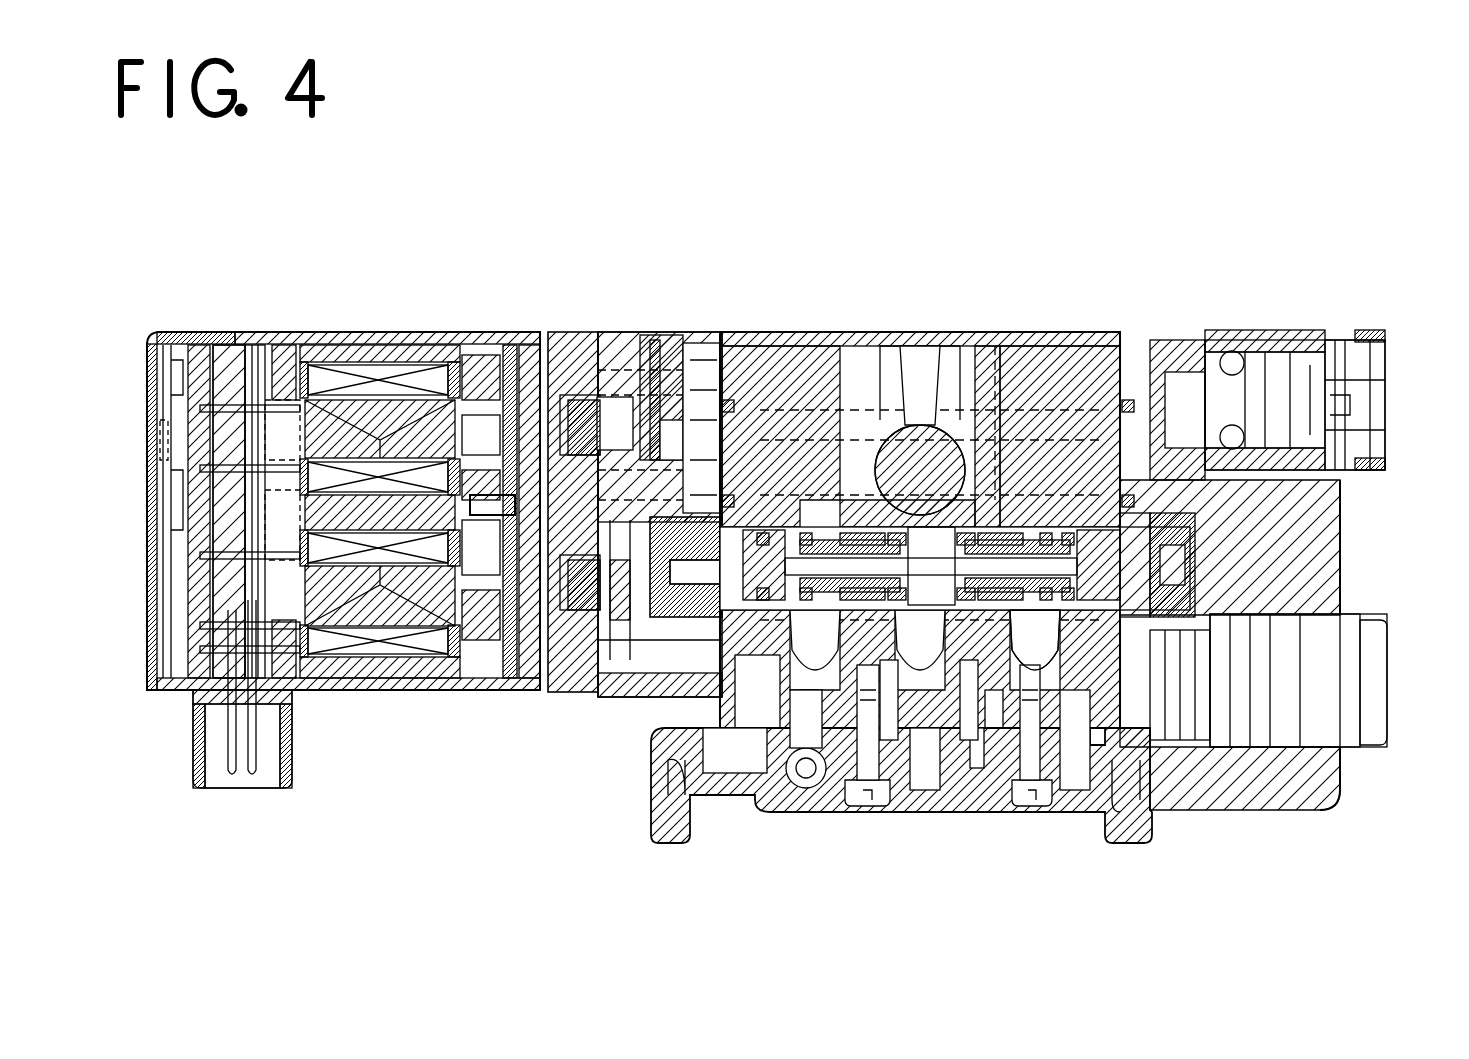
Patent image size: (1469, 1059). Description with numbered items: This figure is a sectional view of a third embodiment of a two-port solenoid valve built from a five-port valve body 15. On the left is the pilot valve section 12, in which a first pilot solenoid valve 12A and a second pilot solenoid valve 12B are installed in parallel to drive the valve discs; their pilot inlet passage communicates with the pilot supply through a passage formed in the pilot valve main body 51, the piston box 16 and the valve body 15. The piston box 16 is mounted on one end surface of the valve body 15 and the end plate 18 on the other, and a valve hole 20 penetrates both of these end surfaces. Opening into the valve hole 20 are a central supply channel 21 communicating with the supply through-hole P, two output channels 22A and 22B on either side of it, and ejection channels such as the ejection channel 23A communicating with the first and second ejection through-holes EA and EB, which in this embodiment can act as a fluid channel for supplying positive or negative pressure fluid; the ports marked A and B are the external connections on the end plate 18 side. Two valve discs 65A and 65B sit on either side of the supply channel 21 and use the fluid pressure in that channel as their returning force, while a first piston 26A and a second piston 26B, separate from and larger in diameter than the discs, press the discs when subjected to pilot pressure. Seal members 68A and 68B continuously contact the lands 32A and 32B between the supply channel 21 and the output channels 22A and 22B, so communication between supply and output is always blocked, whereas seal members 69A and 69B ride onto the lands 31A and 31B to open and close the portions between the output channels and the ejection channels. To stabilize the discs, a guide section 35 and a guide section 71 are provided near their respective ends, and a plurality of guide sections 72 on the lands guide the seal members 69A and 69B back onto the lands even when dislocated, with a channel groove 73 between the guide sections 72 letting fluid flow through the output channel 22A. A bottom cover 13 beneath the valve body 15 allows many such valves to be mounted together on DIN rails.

The pilot valve section 12 is at (370, 315).
The first pilot solenoid valve 12A is at (296, 333).
The second pilot solenoid valve 12B is at (322, 692).
The pilot valve main body 51 is at (568, 333).
The piston box 16 is at (600, 333).
The first piston 26A is at (655, 605).
The valve body 15 is at (800, 346).
The output channel 22A is at (906, 500).
The supply channel 21 is at (930, 612).
The seal member 68A is at (885, 560).
The seal member 68B is at (990, 560).
The valve disc 65A is at (765, 530).
The valve disc 65B is at (1072, 530).
The seal member 69A is at (810, 530).
The seal member 69B is at (1050, 530).
The land 31A is at (862, 530).
The land 31B is at (1030, 530).
The land 32A is at (897, 530).
The land 32B is at (968, 530).
The guide section 35 is at (722, 405).
The second piston 26B is at (1290, 530).
The end plate 18 is at (1268, 333).
The output port A is at (1400, 396).
The output port B is at (1400, 666).
The first ejection through-hole EA is at (815, 640).
The supply through-hole P is at (920, 640).
The second ejection through-hole EB is at (1035, 640).
The bottom cover 13 is at (1098, 777).
The valve hole 20 is at (1110, 785).
The ejection channel 23A is at (790, 690).
The guide section 72 is at (850, 795).
The channel groove 73 is at (862, 690).
The guide section 71 is at (892, 665).
The output channel 22B is at (1005, 640).